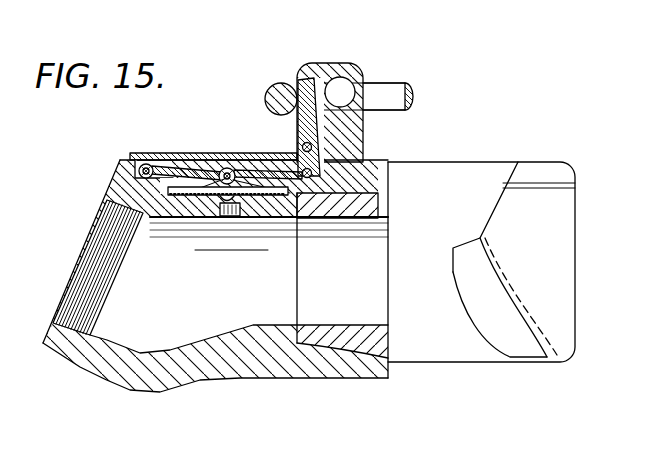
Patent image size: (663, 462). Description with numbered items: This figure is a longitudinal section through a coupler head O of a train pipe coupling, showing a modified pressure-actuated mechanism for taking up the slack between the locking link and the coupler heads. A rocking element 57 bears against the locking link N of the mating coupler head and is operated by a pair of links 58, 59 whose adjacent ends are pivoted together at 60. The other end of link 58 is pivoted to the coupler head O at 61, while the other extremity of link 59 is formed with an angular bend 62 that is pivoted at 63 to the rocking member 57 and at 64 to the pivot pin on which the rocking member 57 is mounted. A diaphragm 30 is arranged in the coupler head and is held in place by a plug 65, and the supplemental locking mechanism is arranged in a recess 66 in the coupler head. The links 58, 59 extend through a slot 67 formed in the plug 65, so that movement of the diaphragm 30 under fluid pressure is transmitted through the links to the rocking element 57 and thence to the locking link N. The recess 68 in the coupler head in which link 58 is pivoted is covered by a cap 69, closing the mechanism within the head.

The coupler head O is at (285, 352).
The locking link N is at (384, 94).
The diaphragm 30 is at (240, 206).
The rocking element 57 is at (299, 112).
The link 58 is at (198, 168).
The link 59 is at (259, 175).
The pivot 60 is at (226, 167).
The pivot 61 is at (138, 169).
The angular bend 62 is at (333, 64).
The pivot 63 is at (311, 172).
The pivot 64 is at (311, 147).
The plug 65 is at (183, 196).
The recess 66 is at (164, 177).
The slot 67 is at (187, 160).
The recess 68 is at (155, 163).
The cap 69 is at (133, 153).